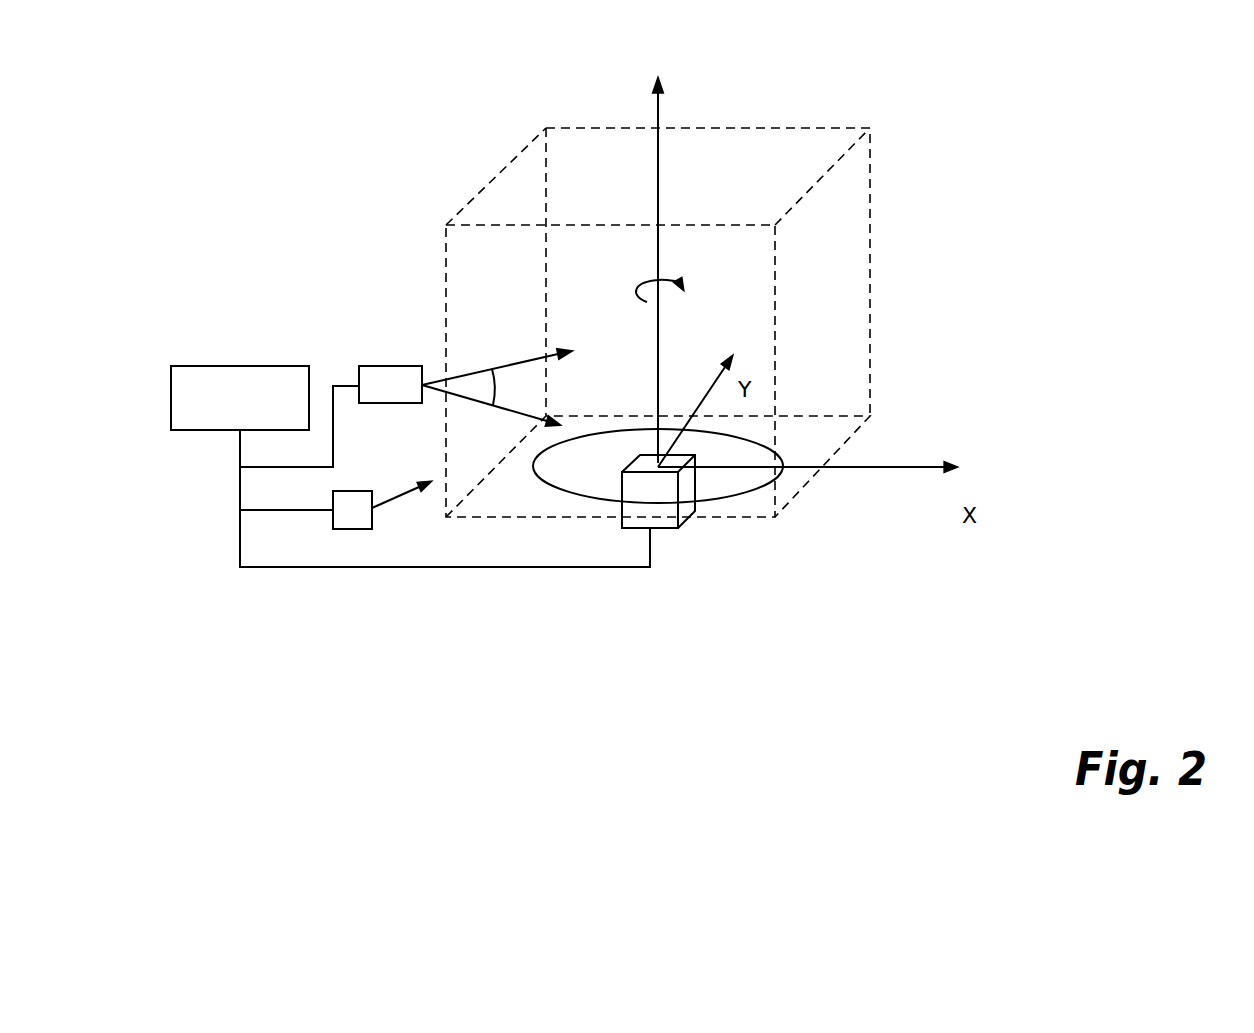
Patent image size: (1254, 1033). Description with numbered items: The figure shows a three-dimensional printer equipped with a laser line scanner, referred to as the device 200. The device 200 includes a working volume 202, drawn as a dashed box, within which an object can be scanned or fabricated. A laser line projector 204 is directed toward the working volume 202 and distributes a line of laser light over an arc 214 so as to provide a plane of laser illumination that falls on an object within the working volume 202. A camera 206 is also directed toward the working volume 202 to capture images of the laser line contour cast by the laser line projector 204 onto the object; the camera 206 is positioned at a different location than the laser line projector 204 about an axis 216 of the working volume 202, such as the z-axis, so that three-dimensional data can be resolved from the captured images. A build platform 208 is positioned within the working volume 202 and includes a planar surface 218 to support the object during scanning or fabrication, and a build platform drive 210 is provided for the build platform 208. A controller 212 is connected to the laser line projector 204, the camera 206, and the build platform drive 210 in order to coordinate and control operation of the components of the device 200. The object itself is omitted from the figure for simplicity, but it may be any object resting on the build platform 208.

The device 200 is at (314, 114).
The working volume 202 is at (872, 197).
The laser line projector 204 is at (380, 366).
The camera 206 is at (352, 529).
The build platform 208 is at (735, 493).
The build platform drive 210 is at (662, 530).
The controller 212 is at (240, 398).
The arc 214 is at (505, 392).
The axis 216 is at (657, 190).
The planar surface 218 is at (597, 440).